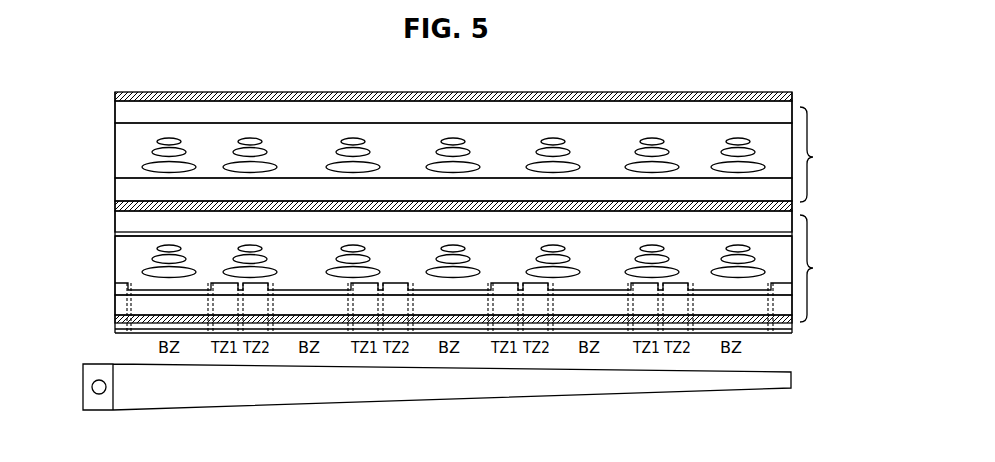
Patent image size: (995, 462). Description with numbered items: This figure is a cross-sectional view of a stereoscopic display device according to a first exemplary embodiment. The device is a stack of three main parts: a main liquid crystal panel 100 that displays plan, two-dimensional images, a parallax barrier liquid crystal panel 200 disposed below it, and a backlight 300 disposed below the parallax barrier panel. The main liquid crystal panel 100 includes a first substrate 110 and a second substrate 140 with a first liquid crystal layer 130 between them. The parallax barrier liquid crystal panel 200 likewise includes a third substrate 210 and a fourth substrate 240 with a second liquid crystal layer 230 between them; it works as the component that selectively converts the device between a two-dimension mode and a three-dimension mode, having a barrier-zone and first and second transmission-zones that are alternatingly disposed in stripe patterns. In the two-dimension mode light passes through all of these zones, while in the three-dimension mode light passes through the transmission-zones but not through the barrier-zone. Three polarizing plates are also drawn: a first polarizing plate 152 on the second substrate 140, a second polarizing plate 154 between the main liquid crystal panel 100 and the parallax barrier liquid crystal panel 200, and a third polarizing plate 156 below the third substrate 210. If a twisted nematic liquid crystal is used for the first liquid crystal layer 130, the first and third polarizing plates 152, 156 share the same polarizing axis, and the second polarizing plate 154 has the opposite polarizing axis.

The main liquid crystal panel 100 is at (824, 154).
The first substrate 110 is at (117, 190).
The first liquid crystal layer 130 is at (117, 152).
The second substrate 140 is at (117, 108).
The first polarizing plate 152 is at (792, 93).
The second polarizing plate 154 is at (792, 205).
The third polarizing plate 156 is at (792, 325).
The parallax barrier liquid crystal panel 200 is at (822, 268).
The third substrate 210 is at (117, 308).
The second liquid crystal layer 230 is at (117, 264).
The fourth substrate 240 is at (117, 222).
The backlight 300 is at (768, 385).